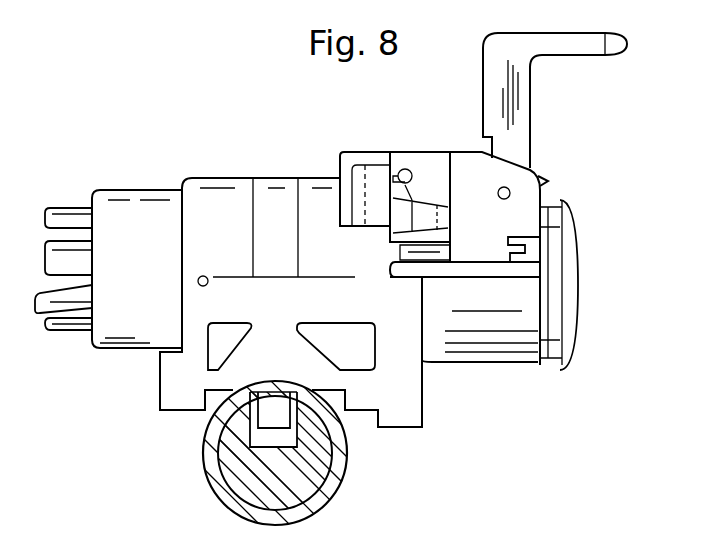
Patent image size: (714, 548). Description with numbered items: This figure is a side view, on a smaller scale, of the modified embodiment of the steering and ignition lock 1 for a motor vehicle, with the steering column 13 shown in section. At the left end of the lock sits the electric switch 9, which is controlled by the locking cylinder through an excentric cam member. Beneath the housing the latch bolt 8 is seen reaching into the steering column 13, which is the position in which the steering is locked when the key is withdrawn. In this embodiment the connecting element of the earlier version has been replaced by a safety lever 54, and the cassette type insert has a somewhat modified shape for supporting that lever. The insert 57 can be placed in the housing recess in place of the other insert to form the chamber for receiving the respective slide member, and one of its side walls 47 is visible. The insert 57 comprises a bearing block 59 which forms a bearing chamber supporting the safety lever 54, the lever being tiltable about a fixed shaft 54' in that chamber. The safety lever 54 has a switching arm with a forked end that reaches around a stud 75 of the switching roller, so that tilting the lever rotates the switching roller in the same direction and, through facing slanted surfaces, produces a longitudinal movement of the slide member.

The steering and ignition lock 1 is at (240, 98).
The electric switch 9 is at (122, 210).
The side wall 47 is at (358, 190).
The stud 75 is at (398, 168).
The safety lever 54 is at (529, 100).
The fixed shaft 54' is at (550, 155).
The insert 57 is at (552, 178).
The bearing block 59 is at (476, 218).
The latch bolt 8 is at (270, 408).
The steering column 13 is at (222, 482).